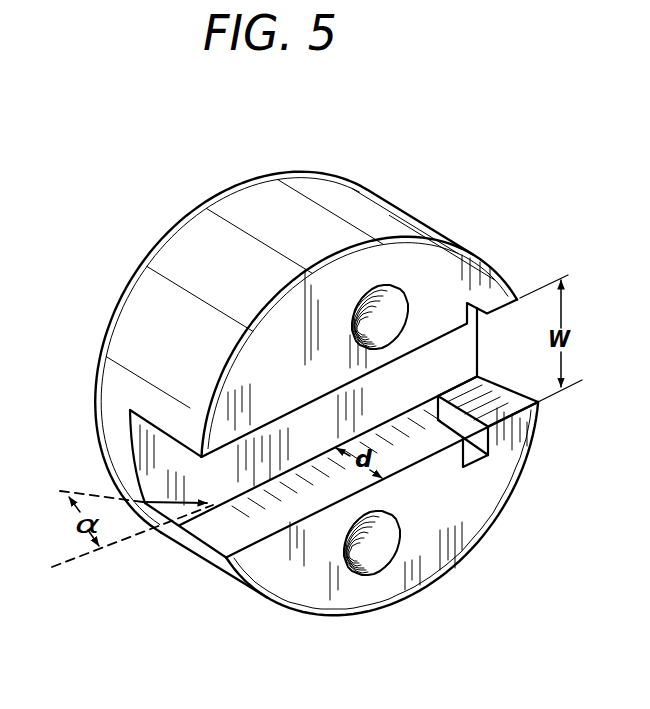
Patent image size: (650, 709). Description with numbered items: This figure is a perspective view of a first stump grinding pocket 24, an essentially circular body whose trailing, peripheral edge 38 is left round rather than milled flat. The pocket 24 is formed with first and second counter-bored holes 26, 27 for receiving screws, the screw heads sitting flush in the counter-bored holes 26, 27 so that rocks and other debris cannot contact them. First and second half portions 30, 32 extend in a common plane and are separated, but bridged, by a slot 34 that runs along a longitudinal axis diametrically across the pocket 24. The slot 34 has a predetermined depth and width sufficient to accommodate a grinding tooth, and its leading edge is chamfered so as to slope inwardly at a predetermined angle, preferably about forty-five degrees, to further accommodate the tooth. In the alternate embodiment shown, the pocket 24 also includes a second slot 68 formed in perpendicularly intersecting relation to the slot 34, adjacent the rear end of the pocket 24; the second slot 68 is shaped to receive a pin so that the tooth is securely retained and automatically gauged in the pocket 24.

The pocket 24 is at (324, 166).
The first counter-bored hole 26 is at (388, 306).
The second counter-bored hole 27 is at (365, 560).
The first half portion 30 is at (500, 283).
The second half portion 32 is at (458, 527).
The slot 34 is at (173, 482).
The trailing peripheral edge 38 is at (174, 266).
The second slot 68 is at (472, 438).